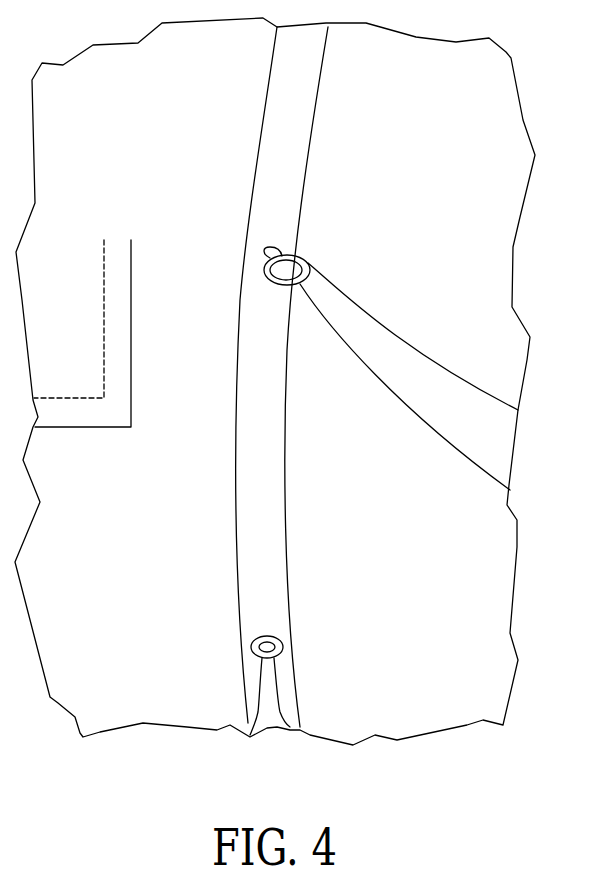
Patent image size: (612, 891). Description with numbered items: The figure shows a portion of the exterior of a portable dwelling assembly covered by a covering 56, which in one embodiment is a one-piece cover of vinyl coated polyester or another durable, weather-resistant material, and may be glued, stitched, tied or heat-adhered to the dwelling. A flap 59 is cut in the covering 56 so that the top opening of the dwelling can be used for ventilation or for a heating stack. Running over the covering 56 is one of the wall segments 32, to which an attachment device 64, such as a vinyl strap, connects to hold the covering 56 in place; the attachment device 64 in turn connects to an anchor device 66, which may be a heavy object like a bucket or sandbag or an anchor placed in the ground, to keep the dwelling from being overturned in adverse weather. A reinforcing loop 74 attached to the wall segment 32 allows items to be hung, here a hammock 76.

The covering 56 is at (463, 228).
The wall segments 32 is at (277, 438).
The flap 59 is at (78, 428).
The reinforcing loops 74 is at (300, 256).
The hammock 76 is at (403, 352).
The attachment devices 64 is at (280, 638).
The anchor devices 66 is at (257, 698).